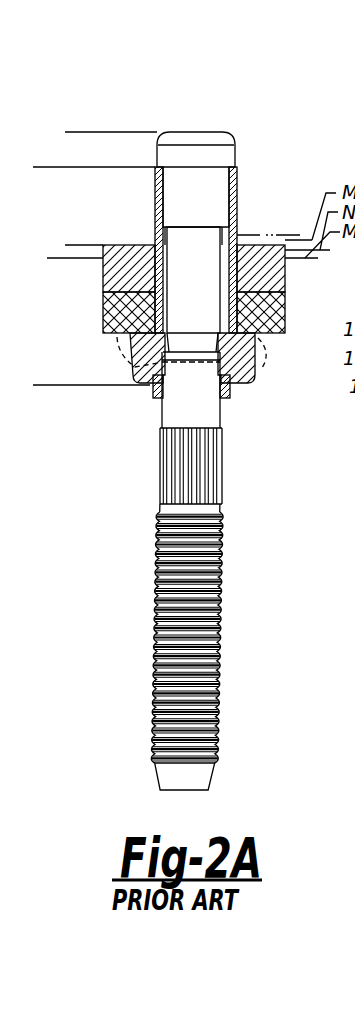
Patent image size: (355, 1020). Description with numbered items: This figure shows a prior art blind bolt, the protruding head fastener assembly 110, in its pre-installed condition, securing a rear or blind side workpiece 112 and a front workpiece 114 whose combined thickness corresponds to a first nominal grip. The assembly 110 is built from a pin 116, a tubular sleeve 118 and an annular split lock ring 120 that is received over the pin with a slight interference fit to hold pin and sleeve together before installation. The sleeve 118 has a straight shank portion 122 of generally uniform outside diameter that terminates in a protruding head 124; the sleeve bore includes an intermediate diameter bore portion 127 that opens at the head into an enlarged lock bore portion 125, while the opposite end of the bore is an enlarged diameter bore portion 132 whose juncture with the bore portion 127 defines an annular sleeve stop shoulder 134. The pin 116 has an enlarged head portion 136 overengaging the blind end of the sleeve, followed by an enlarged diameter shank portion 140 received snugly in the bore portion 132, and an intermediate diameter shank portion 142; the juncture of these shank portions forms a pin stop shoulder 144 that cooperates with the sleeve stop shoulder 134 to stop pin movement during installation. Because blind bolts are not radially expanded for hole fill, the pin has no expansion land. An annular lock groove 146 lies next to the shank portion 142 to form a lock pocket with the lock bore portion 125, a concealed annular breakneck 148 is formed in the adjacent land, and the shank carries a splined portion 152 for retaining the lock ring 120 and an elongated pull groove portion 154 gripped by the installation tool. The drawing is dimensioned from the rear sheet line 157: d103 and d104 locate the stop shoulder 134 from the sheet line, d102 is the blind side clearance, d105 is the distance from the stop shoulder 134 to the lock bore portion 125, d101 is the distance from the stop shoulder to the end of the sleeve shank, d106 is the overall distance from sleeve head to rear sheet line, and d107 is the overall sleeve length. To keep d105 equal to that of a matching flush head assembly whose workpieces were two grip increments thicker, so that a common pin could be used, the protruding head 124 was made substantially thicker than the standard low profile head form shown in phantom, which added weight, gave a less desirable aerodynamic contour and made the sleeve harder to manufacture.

The protruding head fastener assembly 110 is at (149, 436).
The workpiece 112 is at (101, 280).
The workpiece 114 is at (102, 331).
The pin 116 is at (223, 133).
The tubular sleeve 118 is at (238, 171).
The lock ring 120 is at (155, 397).
The straight shank portion 122 is at (156, 178).
The protruding head 124 is at (250, 372).
The lock bore portion 125 is at (231, 386).
The intermediate diameter bore portion 127 is at (160, 303).
The enlarged diameter bore portion 132 is at (163, 187).
The sleeve stop shoulder 134 is at (168, 245).
The head portion 136 is at (195, 131).
The enlarged diameter shank portion 140 is at (205, 181).
The intermediate diameter shank portion 142 is at (208, 280).
The pin stop shoulder 144 is at (180, 229).
The annular lock groove 146 is at (188, 342).
The breakneck 148 is at (262, 326).
The splined portion 152 is at (223, 468).
The pull groove portion 154 is at (160, 594).
The rear sheet line 157 is at (155, 246).
The dimension d101 is at (55, 258).
The dimension d102 is at (72, 245).
The dimension d103 is at (304, 237).
The dimension d104 is at (295, 235).
The dimension d105 is at (54, 258).
The dimension d106 is at (71, 245).
The dimension d107 is at (41, 167).